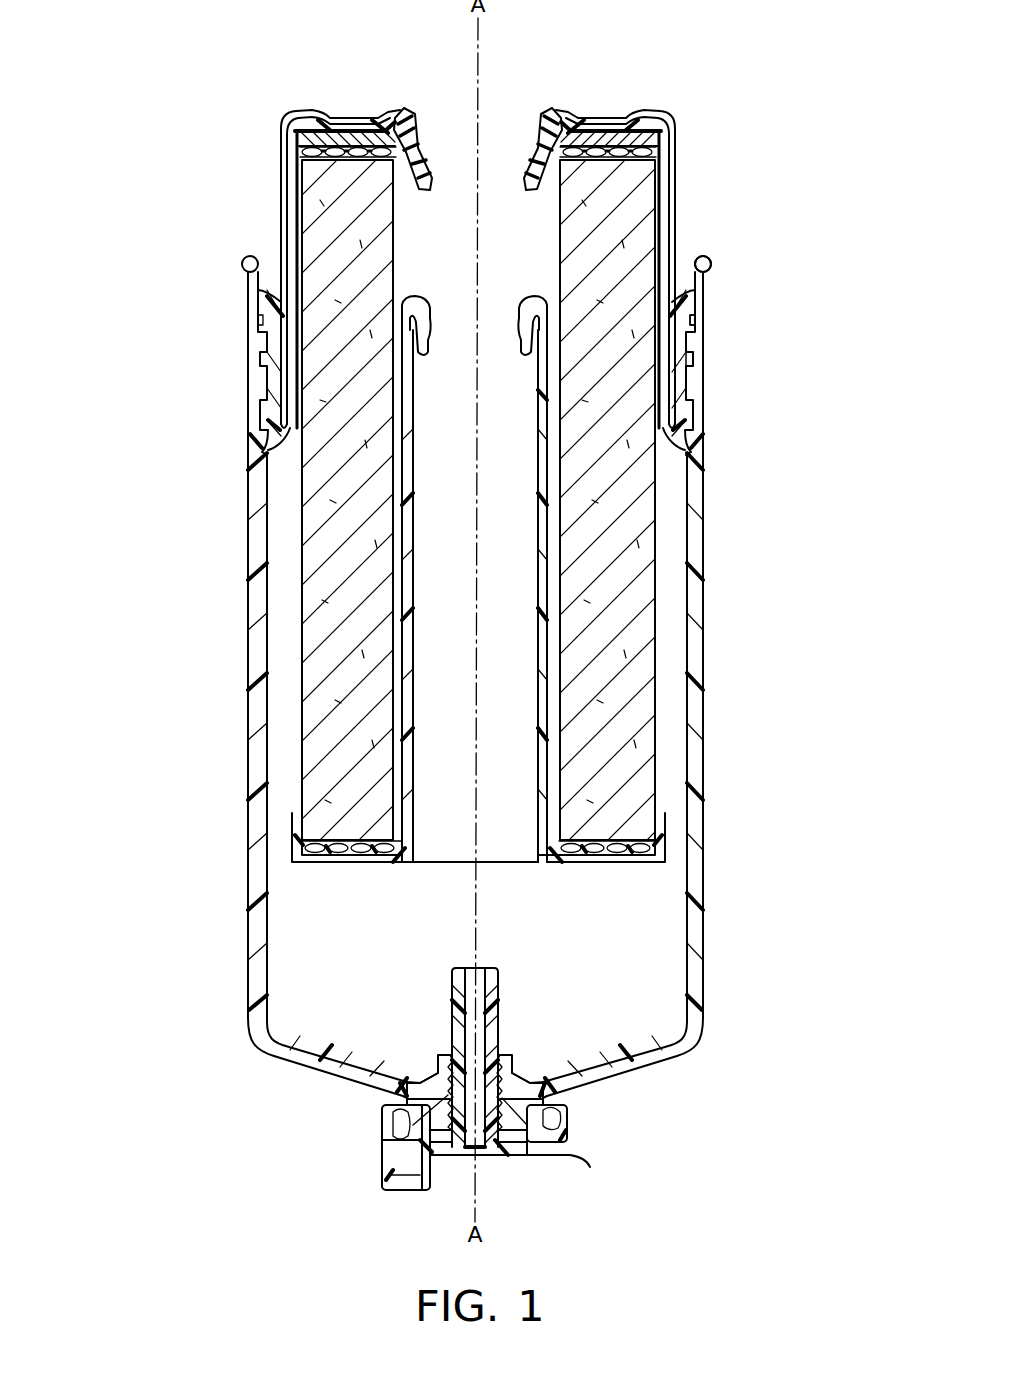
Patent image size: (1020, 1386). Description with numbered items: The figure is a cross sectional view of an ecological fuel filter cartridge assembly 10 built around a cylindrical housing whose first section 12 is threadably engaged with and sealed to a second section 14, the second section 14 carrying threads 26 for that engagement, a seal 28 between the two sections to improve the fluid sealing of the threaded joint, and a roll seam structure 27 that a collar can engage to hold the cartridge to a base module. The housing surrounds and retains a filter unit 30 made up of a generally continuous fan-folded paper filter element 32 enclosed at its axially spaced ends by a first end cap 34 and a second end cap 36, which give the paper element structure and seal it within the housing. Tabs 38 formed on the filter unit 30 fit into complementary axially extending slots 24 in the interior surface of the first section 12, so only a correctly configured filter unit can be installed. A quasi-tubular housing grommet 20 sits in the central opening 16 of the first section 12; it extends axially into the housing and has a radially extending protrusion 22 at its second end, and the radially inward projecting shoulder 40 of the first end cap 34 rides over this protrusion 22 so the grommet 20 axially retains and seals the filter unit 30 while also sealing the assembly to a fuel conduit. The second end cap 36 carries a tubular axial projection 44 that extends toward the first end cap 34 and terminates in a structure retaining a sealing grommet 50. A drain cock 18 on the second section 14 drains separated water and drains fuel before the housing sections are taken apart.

The fuel filter cartridge assembly 10 is at (157, 408).
The housing first section 12 is at (281, 180).
The housing second section 14 is at (703, 864).
The central opening 16 is at (456, 125).
The drain cock 18 is at (515, 1155).
The housing grommet 20 is at (545, 112).
The radially extending protrusion 22 is at (363, 153).
The slots 24 is at (703, 451).
The threads 26 is at (702, 360).
The roll seam structure 27 is at (712, 269).
The seal 28 is at (702, 322).
The filter unit 30 is at (658, 593).
The filter element 32 is at (302, 678).
The first end cap 34 is at (610, 148).
The second end cap 36 is at (342, 862).
The tabs 38 is at (282, 122).
The shoulder 40 is at (420, 152).
The tubular axial projection 44 is at (420, 566).
The sealing grommet 50 is at (418, 322).